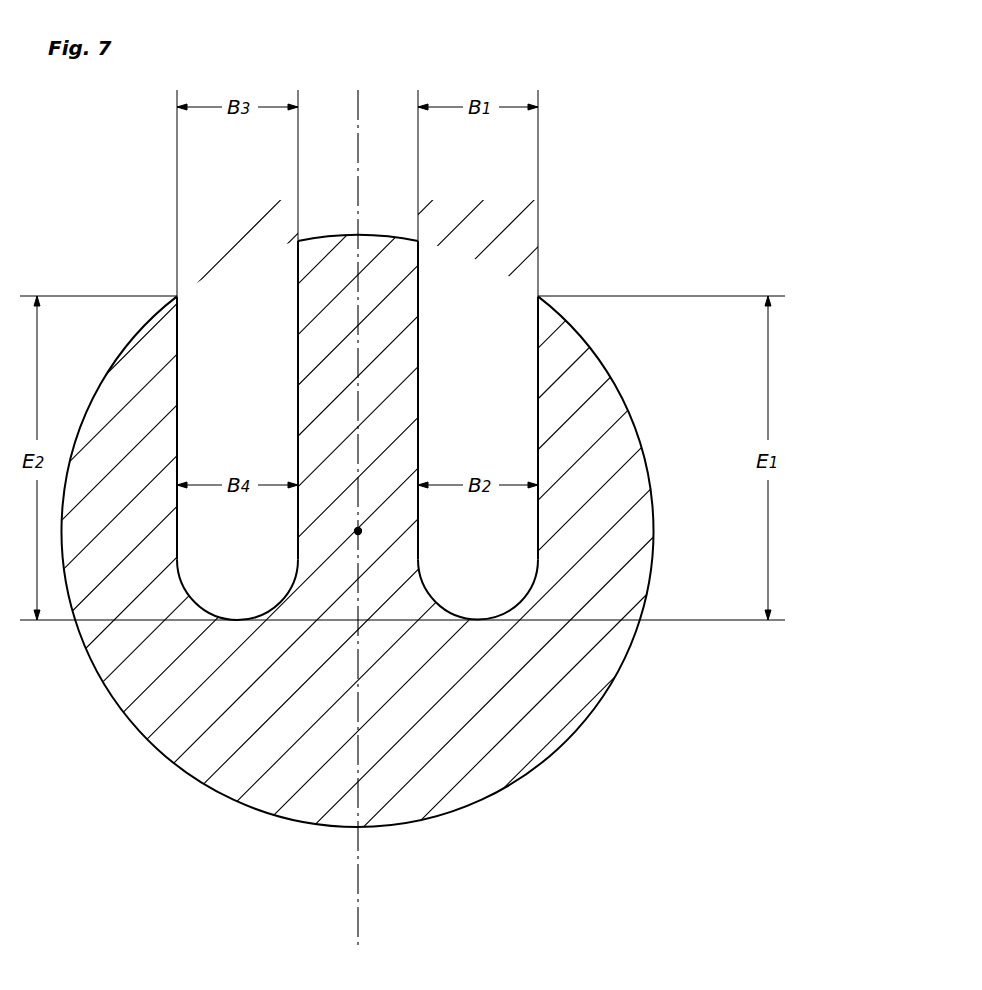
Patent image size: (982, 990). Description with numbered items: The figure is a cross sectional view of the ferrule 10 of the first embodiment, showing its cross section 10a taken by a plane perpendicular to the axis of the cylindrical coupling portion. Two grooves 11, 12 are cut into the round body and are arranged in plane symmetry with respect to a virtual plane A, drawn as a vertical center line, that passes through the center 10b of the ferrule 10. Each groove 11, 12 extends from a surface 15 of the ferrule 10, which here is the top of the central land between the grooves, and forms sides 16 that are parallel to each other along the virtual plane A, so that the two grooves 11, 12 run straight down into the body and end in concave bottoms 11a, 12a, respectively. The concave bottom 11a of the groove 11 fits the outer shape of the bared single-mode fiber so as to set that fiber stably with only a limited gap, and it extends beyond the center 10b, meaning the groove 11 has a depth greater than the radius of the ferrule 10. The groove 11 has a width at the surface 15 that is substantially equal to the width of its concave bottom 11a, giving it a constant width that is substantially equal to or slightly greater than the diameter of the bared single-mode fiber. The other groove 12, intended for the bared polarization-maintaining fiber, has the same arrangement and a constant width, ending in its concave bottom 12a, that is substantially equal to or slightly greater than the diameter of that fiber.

The ferrule 10 is at (491, 495).
The cross section 10a is at (605, 514).
The center 10b is at (358, 531).
The groove 11 is at (578, 392).
The concave bottom 11a is at (475, 620).
The groove 12 is at (174, 474).
The concave bottom 12a is at (238, 620).
The surface 15 is at (366, 427).
The sides 16 is at (418, 510).
The virtual plane A is at (358, 762).